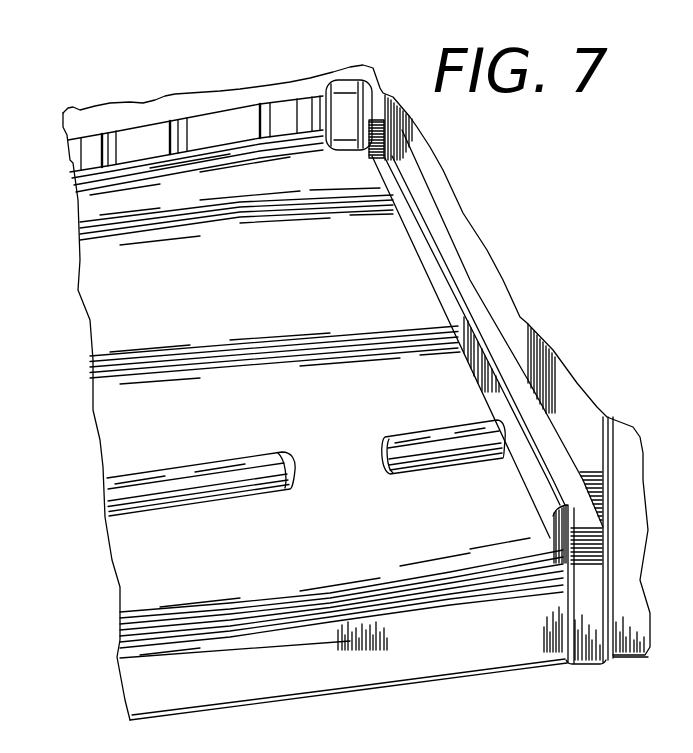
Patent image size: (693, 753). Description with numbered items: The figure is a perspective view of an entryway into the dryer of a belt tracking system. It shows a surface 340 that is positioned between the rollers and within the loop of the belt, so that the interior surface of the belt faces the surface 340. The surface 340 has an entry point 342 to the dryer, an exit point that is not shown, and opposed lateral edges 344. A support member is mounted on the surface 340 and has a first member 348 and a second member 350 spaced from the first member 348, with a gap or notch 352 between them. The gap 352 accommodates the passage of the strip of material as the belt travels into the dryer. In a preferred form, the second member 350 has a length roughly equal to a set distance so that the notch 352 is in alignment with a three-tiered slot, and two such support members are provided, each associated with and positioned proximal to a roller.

The surface 340 is at (430, 310).
The entry point 342 is at (425, 587).
The opposed lateral edges 344 is at (140, 437).
The first member 348 is at (260, 483).
The second member 350 is at (428, 450).
The gap or notch 352 is at (346, 496).